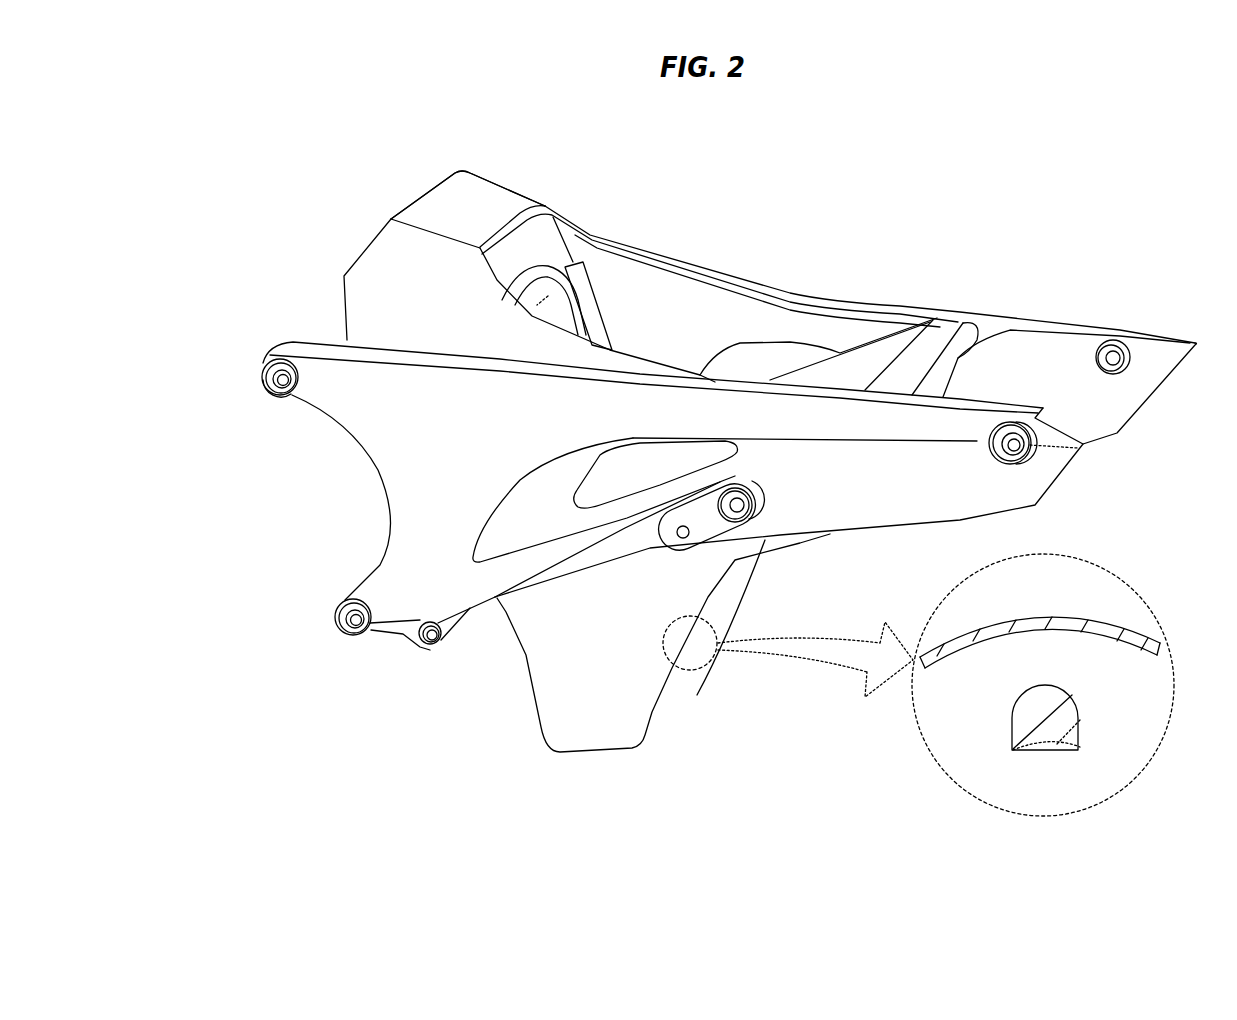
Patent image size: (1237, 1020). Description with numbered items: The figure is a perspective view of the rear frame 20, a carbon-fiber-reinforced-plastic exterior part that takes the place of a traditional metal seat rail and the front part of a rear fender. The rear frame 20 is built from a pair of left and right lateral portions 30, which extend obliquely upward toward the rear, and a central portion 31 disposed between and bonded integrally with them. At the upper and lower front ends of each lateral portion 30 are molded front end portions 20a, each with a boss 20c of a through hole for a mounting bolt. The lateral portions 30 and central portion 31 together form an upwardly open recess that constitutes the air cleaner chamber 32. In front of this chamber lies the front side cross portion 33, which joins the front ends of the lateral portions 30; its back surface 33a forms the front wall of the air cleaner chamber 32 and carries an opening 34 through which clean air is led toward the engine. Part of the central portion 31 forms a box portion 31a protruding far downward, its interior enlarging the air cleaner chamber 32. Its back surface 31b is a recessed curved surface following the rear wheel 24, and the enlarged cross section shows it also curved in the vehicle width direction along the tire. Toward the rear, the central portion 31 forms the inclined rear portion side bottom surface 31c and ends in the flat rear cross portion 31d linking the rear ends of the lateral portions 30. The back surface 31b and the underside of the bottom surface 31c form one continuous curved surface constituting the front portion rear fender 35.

The rear frame 20 is at (713, 213).
The front end portions 20a is at (315, 408).
The boss 20c is at (262, 370).
The rear wheel 24 is at (1022, 700).
The lateral portions 30 is at (830, 297).
The central portion 31 is at (372, 240).
The box portion 31a is at (543, 663).
The back surface 31b is at (747, 583).
The rear portion side bottom surface 31c is at (865, 353).
The rear cross portion 31d is at (928, 357).
The air cleaner chamber 32 is at (670, 318).
The front side cross portion 33 is at (510, 193).
The back surface 33a is at (543, 240).
The opening 34 is at (570, 265).
The front portion rear fender 35 is at (665, 689).